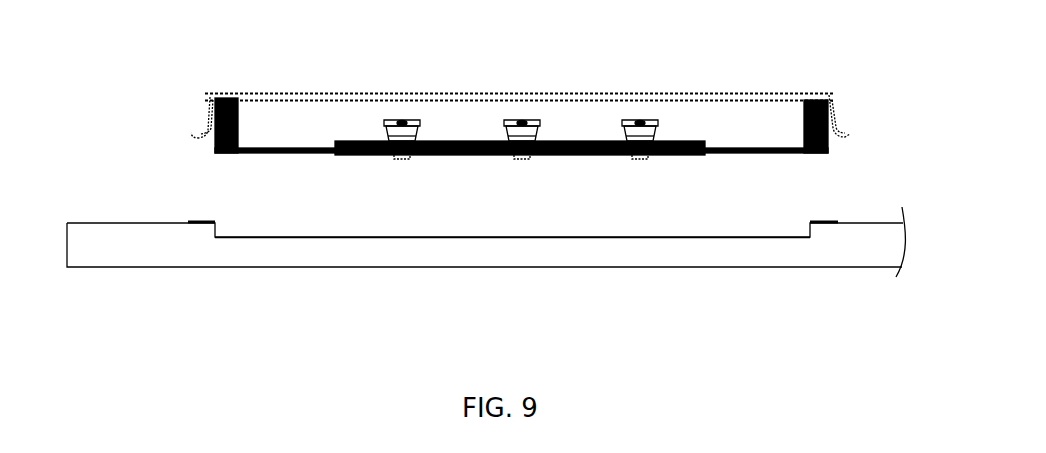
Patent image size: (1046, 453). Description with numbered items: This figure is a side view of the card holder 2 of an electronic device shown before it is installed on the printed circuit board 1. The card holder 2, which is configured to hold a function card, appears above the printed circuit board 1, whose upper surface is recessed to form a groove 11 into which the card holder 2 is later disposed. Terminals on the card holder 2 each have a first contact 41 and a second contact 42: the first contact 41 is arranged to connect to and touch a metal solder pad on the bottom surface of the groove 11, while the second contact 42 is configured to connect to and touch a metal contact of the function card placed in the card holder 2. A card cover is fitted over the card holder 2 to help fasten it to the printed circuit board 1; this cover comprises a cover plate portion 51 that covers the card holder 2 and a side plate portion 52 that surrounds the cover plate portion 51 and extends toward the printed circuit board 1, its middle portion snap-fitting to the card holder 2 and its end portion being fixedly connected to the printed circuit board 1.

The printed circuit board 1 is at (143, 247).
The groove 11 is at (242, 237).
The card holder 2 is at (215, 142).
The first contact 41 is at (405, 158).
The second contact 42 is at (403, 120).
The cover plate portion 51 is at (608, 98).
The side plate portion 52 is at (838, 123).